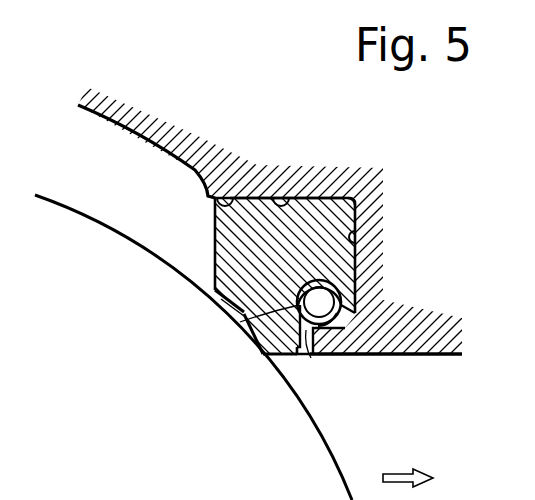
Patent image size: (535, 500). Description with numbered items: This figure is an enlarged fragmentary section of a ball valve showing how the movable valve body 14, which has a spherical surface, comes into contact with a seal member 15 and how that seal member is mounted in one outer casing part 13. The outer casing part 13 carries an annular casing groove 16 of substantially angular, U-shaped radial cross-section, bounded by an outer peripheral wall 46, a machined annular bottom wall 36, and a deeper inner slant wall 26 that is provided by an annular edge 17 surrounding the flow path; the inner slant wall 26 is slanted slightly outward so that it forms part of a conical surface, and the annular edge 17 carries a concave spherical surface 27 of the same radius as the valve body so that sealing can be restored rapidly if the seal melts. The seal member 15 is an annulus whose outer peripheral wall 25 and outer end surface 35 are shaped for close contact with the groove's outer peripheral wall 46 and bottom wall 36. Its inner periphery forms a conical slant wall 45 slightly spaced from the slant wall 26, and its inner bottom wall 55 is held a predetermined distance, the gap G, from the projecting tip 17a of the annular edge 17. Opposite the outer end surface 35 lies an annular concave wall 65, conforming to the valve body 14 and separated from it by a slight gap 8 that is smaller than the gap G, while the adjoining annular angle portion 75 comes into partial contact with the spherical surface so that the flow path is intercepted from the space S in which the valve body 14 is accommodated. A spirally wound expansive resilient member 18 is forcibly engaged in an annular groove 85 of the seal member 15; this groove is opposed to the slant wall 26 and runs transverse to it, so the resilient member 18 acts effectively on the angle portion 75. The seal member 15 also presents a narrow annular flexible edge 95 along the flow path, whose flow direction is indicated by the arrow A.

The space S is at (118, 137).
The movable valve body 14 is at (83, 234).
The annular casing groove 16 is at (276, 207).
The seal member 15 is at (305, 217).
The outer peripheral wall 46 is at (258, 198).
The outer peripheral wall 25 is at (227, 200).
The outer end surface 35 is at (363, 208).
The annular bottom wall 36 is at (360, 242).
The expansive resilient member 18 is at (335, 289).
The conical slant wall 45 is at (352, 313).
The projecting tip 17a is at (298, 323).
The annular edge 17 is at (316, 335).
The outer casing part 13 is at (457, 354).
The inner slant wall 26 is at (360, 354).
The concave spherical surface 27 is at (314, 345).
The gap G is at (312, 347).
The inner bottom wall 55 is at (306, 357).
The annular angle portion 75 is at (258, 356).
The annular flexible edge 95 is at (296, 357).
The annular concave wall 65 is at (212, 298).
The lip edge 8 is at (215, 311).
The annular groove 85 is at (243, 330).
The arrow A is at (402, 466).